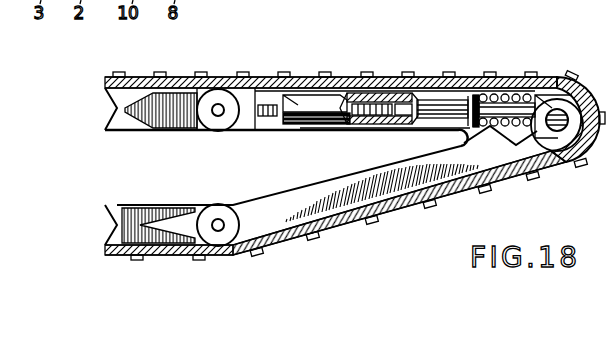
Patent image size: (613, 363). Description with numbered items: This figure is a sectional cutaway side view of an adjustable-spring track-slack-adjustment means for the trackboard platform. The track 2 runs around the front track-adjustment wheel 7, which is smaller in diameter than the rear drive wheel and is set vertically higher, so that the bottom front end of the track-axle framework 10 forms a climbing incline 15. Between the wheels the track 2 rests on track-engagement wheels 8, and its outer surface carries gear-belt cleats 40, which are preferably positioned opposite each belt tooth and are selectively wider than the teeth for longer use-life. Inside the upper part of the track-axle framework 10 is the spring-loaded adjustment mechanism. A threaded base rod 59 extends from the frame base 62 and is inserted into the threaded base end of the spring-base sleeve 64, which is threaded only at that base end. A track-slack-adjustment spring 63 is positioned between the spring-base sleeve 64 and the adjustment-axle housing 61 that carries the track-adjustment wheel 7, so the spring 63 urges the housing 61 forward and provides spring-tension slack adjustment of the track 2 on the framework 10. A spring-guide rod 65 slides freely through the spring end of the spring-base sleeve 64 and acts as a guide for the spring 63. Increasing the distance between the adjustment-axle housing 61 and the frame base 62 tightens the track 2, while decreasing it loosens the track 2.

The track 2 is at (189, 77).
The track-adjustment wheel 7 is at (560, 76).
The track-engagement wheels 8 is at (258, 77).
The track-axle framework 10 is at (168, 70).
The climbing incline 15 is at (497, 188).
The gear-belt cleats 40 is at (203, 80).
The base rod 59 is at (331, 92).
The adjustment-axle housing 61 is at (528, 92).
The frame base 62 is at (287, 85).
The track-slack-adjustment spring 63 is at (490, 92).
The spring-base sleeve 64 is at (427, 100).
The spring-guide rod 65 is at (464, 95).